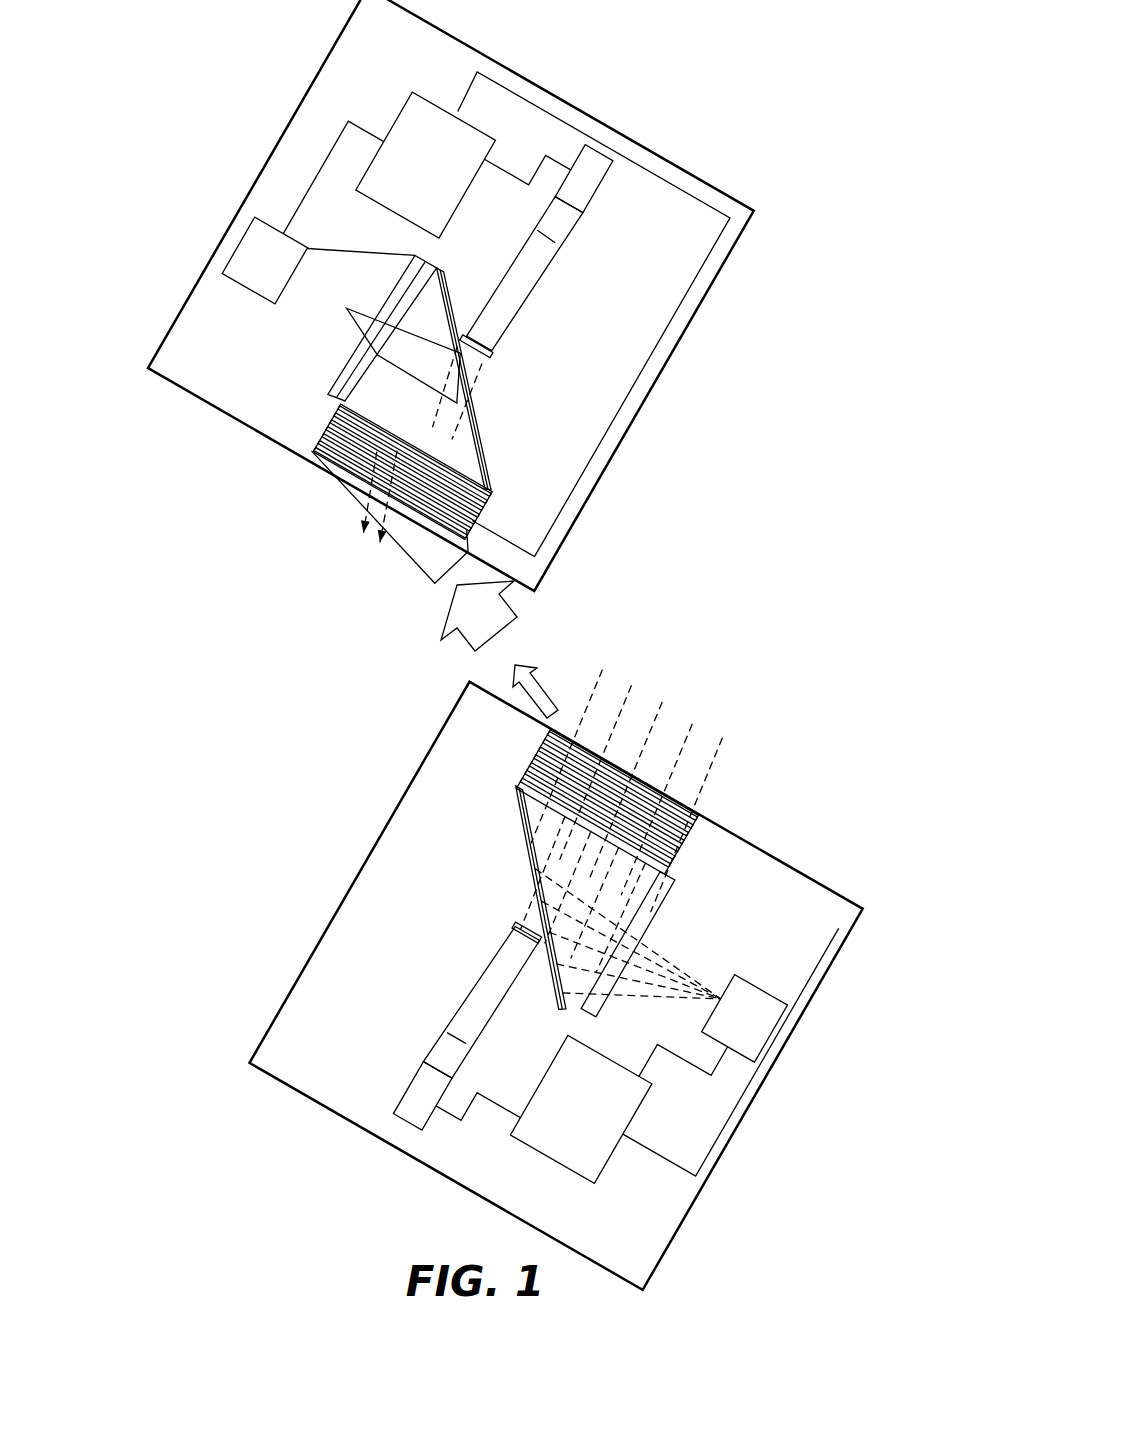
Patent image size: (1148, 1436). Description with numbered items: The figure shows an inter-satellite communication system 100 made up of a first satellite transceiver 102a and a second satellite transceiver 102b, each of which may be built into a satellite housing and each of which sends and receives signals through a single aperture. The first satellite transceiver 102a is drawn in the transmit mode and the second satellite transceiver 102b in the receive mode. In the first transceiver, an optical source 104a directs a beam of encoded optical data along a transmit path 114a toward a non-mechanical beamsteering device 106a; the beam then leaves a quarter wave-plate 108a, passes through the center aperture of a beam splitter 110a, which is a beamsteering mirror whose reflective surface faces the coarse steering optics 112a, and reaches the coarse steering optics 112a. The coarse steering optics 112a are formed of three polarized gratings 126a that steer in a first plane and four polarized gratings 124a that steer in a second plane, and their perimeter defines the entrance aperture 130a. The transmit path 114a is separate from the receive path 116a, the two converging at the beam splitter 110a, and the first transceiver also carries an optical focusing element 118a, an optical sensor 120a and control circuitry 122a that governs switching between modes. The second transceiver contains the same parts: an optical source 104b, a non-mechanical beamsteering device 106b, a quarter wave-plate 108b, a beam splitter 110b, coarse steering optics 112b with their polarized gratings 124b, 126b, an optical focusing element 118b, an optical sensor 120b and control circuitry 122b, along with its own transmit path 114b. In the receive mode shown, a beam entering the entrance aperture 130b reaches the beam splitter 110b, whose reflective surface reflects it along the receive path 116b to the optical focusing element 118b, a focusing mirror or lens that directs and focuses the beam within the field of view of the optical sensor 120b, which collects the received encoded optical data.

The inter-satellite communication system 100 is at (713, 62).
The first satellite transceiver 102a is at (383, 832).
The second satellite transceiver 102b is at (562, 96).
The optical source 104a is at (405, 1087).
The optical source 104b is at (603, 150).
The non-mechanical beamsteering device 106a is at (482, 982).
The non-mechanical beamsteering device 106b is at (547, 260).
The quarter wave-plate 108a is at (515, 928).
The quarter wave-plate 108b is at (492, 355).
The beam splitter 110a is at (518, 817).
The beam splitter 110b is at (480, 442).
The coarse steering optics 112a is at (522, 786).
The coarse steering optics 112b is at (491, 490).
The transmit path 114a is at (531, 890).
The transmit path 114b is at (470, 393).
The receive path 116a is at (580, 945).
The receive path 116b is at (425, 312).
The optical focusing element 118a is at (690, 888).
The optical focusing element 118b is at (347, 358).
The optical sensor 120a is at (771, 1036).
The optical sensor 120b is at (238, 242).
The control circuitry 122a is at (609, 1168).
The control circuitry 122b is at (428, 99).
The polarized gratings 124a is at (697, 824).
The polarized gratings 124b is at (491, 494).
The polarized gratings 126a is at (545, 745).
The polarized gratings 126b is at (333, 422).
The entrance aperture 130a is at (658, 743).
The entrance aperture 130b is at (338, 497).